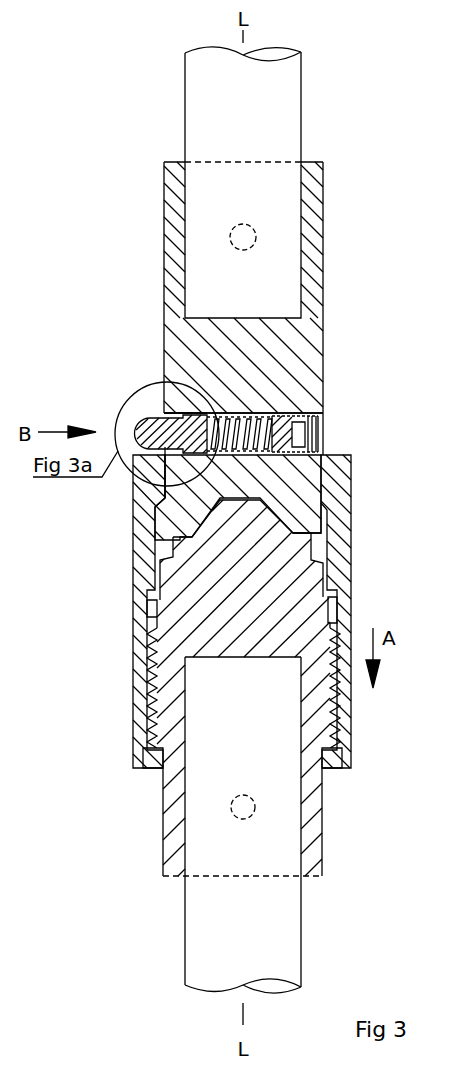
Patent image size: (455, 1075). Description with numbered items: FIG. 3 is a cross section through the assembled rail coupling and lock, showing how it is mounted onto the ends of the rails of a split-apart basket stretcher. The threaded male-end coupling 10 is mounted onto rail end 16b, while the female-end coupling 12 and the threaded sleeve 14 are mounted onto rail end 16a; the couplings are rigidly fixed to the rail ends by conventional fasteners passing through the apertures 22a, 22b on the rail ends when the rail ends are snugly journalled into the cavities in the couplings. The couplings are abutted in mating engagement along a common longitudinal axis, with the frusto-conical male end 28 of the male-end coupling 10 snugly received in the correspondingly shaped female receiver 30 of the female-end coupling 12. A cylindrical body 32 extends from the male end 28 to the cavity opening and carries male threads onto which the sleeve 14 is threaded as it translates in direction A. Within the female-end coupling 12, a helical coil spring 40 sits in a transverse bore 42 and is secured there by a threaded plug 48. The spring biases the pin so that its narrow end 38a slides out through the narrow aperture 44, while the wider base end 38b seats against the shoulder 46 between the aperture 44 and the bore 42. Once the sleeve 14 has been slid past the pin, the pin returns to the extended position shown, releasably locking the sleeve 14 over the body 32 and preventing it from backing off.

The threaded male-end coupling 10 is at (340, 866).
The female-end coupling 12 is at (323, 292).
The threaded sleeve 14 is at (345, 572).
The rail end 16a is at (301, 108).
The rail end 16b is at (301, 949).
The aperture 22a is at (251, 236).
The aperture 22b is at (250, 805).
The frusto-conical male end 28 is at (265, 522).
The female receiver 30 is at (312, 530).
The cylindrical body 32 is at (322, 818).
The narrow end of pin 38a is at (148, 422).
The base end of pin 38b is at (178, 412).
The helical coil spring 40 is at (272, 411).
The transverse bore 42 is at (250, 420).
The narrow aperture 44 is at (167, 468).
The shoulder 46 is at (133, 505).
The threaded plug 48 is at (319, 440).